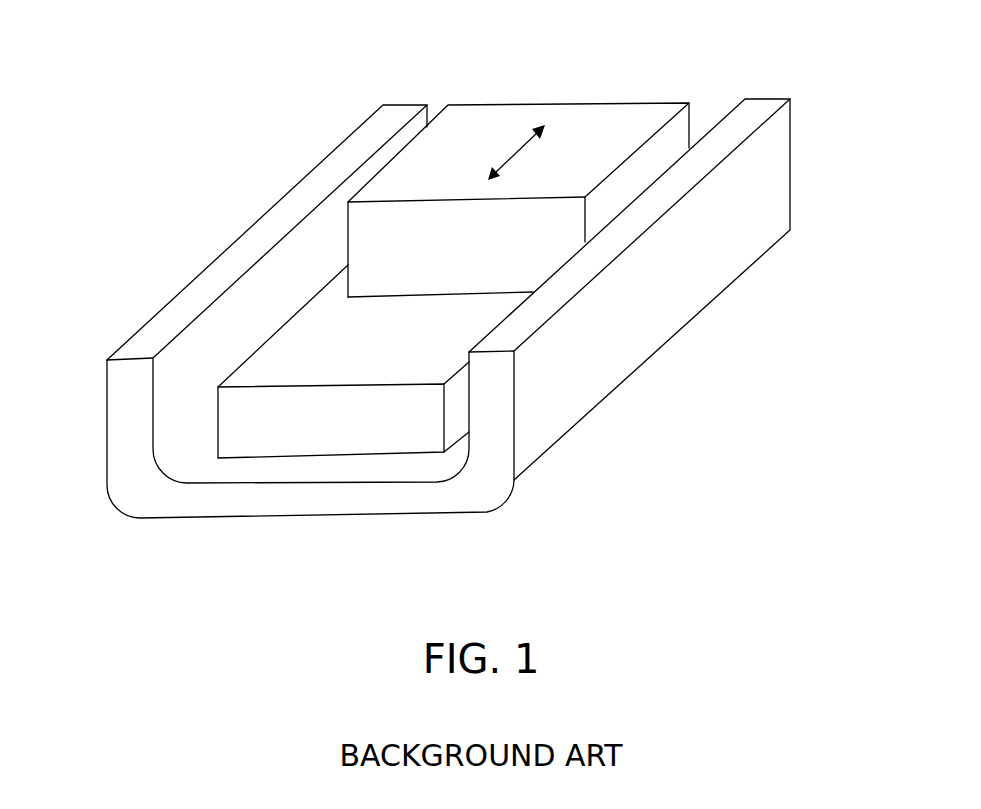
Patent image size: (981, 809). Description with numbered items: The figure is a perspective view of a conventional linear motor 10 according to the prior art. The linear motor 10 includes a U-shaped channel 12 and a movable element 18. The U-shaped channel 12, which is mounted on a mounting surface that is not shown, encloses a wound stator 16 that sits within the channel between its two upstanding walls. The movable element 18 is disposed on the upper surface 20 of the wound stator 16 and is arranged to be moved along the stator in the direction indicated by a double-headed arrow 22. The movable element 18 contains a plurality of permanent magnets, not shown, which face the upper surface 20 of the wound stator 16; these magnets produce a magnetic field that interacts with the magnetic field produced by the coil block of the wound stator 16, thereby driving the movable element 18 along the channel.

The linear motor 10 is at (82, 241).
The U-shaped channel 12 is at (765, 173).
The wound stator 16 is at (422, 422).
The movable element 18 is at (573, 133).
The upper surface 20 is at (308, 357).
The double-headed arrow 22 is at (515, 152).